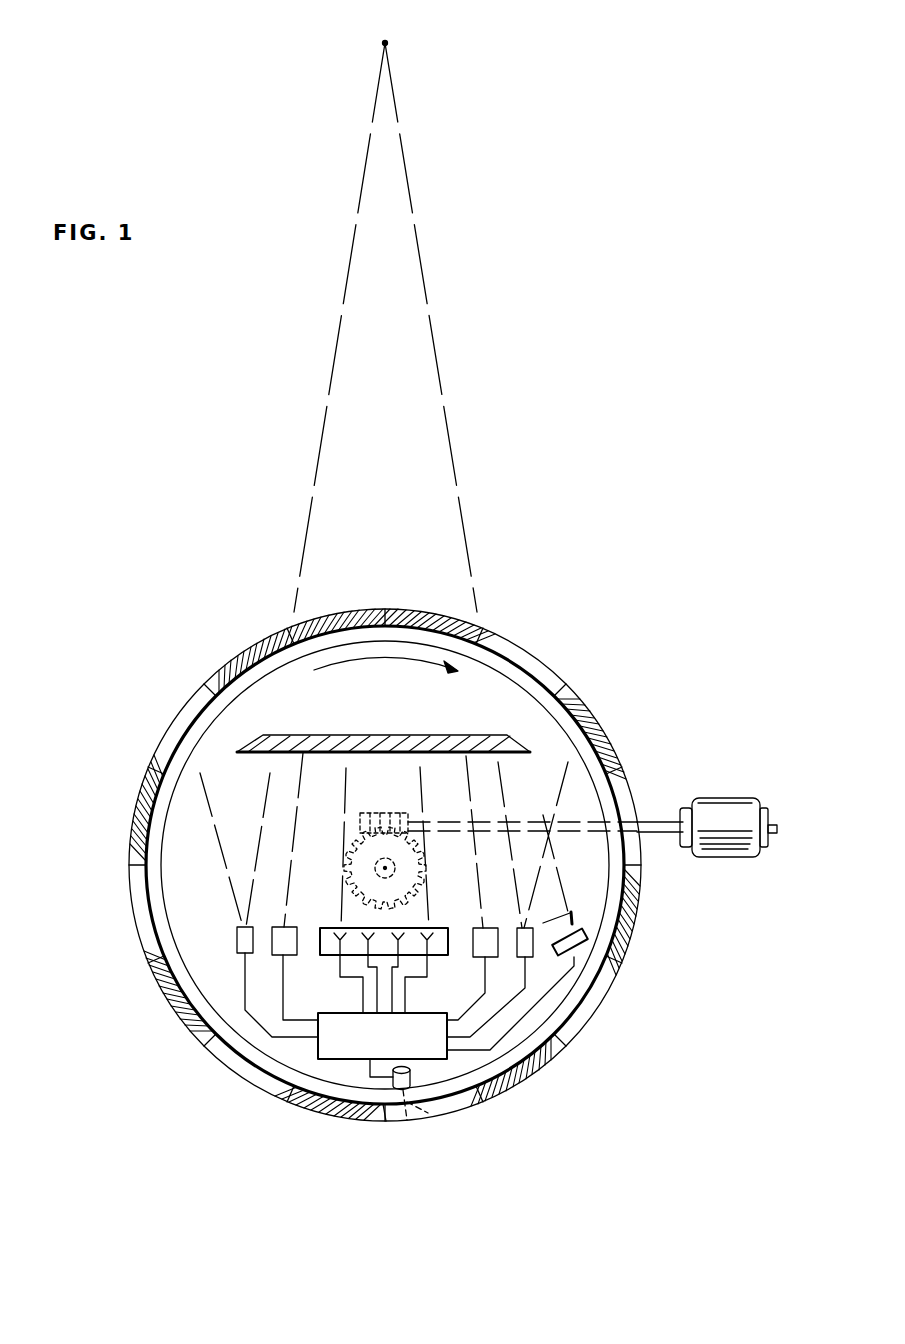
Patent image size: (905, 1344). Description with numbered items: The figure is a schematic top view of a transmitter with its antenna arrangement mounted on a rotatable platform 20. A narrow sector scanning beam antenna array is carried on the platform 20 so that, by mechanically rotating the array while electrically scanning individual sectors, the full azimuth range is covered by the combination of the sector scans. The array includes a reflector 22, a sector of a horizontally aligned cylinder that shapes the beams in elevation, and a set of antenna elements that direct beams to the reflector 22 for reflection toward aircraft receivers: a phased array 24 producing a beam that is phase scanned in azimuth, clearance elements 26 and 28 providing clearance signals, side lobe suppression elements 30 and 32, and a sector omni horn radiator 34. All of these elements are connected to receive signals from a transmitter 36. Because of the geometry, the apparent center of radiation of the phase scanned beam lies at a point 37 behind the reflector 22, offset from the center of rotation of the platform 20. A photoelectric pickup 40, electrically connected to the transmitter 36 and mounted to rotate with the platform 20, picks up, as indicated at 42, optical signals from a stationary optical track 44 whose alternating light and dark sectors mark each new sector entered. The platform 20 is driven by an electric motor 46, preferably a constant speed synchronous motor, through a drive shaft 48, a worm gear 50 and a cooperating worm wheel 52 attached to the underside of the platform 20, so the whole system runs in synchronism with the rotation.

The platform 20 is at (192, 747).
The reflector 22 is at (503, 757).
The phased array 24 is at (333, 957).
The clearance element 26 is at (281, 927).
The clearance element 28 is at (478, 928).
The side lobe suppression element 30 is at (238, 930).
The side lobe suppression element 32 is at (519, 928).
The sector omni horn radiator 34 is at (571, 918).
The transmitter 36 is at (428, 1013).
The point 37 is at (385, 43).
The photoelectric pickup 40 is at (410, 1075).
The optical pickup arrangement 42 is at (428, 1116).
The optical track 44 is at (400, 1123).
The electric motor 46 is at (738, 800).
The drive shaft 48 is at (657, 822).
The worm gear 50 is at (388, 813).
The worm wheel 52 is at (425, 872).